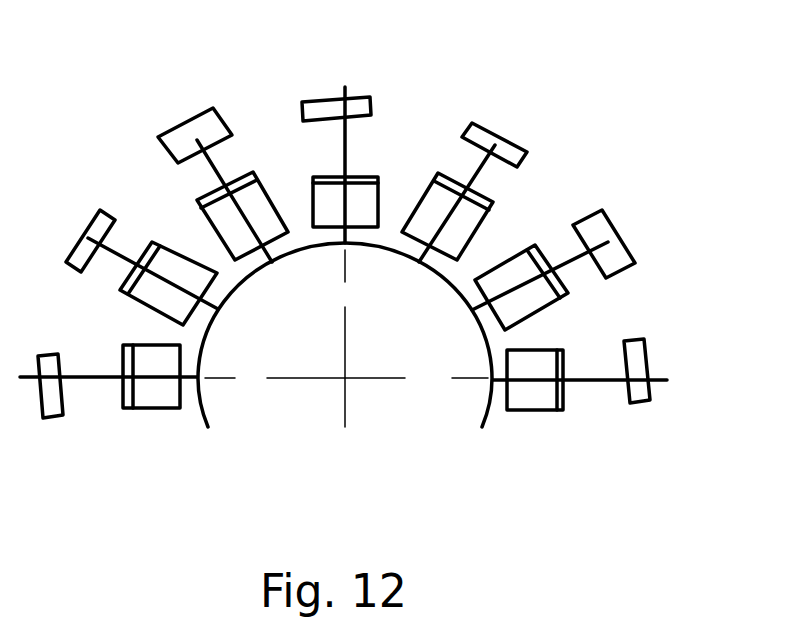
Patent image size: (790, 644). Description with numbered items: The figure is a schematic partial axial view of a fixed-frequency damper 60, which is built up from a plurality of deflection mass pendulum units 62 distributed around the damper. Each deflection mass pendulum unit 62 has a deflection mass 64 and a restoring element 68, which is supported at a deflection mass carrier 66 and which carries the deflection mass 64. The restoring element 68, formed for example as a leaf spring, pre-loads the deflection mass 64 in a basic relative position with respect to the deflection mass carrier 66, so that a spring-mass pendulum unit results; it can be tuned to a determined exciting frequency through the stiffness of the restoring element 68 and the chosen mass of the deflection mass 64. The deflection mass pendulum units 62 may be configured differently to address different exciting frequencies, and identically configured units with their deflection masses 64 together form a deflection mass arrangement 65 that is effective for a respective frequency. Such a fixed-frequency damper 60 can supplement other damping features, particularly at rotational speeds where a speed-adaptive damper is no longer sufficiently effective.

The fixed-frequency damper 60 is at (280, 413).
The deflection mass pendulum unit 62 is at (517, 242).
The deflection mass 64 is at (510, 143).
The deflection mass arrangement 65 is at (632, 327).
The deflection mass carrier 66 is at (474, 233).
The restoring element 68 is at (466, 187).